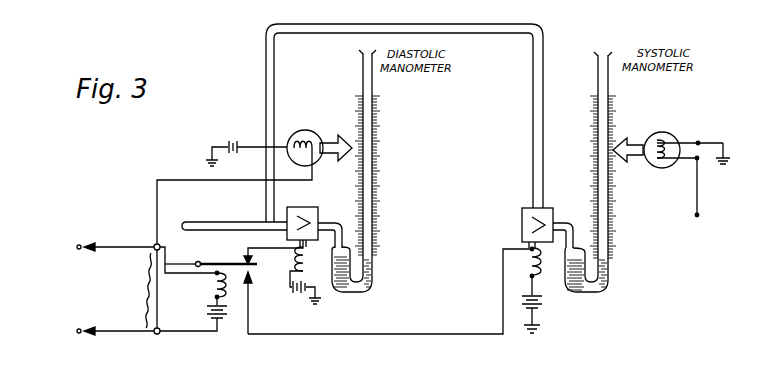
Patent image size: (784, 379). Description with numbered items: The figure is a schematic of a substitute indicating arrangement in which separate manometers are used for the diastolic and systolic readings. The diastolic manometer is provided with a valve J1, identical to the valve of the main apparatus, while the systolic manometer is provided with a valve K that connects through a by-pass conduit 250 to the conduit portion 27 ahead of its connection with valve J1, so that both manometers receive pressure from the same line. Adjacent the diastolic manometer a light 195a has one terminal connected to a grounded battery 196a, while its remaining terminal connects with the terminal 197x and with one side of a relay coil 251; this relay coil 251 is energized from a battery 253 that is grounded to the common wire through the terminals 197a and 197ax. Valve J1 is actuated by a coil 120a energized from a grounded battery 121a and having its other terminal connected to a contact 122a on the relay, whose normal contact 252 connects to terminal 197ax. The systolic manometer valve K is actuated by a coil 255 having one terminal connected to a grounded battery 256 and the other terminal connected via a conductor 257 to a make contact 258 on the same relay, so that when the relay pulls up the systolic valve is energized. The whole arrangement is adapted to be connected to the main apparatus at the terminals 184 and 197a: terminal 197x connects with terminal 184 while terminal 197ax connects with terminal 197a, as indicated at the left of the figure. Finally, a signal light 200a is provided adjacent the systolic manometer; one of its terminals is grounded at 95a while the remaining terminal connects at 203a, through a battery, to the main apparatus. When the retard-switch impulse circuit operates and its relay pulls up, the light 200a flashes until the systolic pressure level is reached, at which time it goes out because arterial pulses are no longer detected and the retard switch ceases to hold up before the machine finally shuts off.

The by-pass conduit 250 is at (275, 88).
The conduit portion 27 is at (238, 208).
The valve J′ J1 is at (314, 217).
The valve K is at (547, 217).
The grounded battery 196a is at (236, 140).
The light 195a is at (301, 132).
The contact 122a is at (247, 256).
The normal contact 252 is at (213, 262).
The relay coil 251 is at (227, 297).
The battery 253 is at (209, 308).
The terminal 197x is at (153, 249).
The terminal 184 is at (78, 245).
The terminal 197ax is at (155, 334).
The terminal 197a is at (77, 332).
The make contact 258 is at (250, 290).
The conductor 257 is at (440, 322).
The coil 120a is at (295, 258).
The grounded battery 121a is at (299, 295).
The coil 255 is at (529, 258).
The grounded battery 256 is at (537, 305).
The light 200a is at (668, 121).
The ground 95a is at (728, 157).
The terminal 203a is at (697, 217).